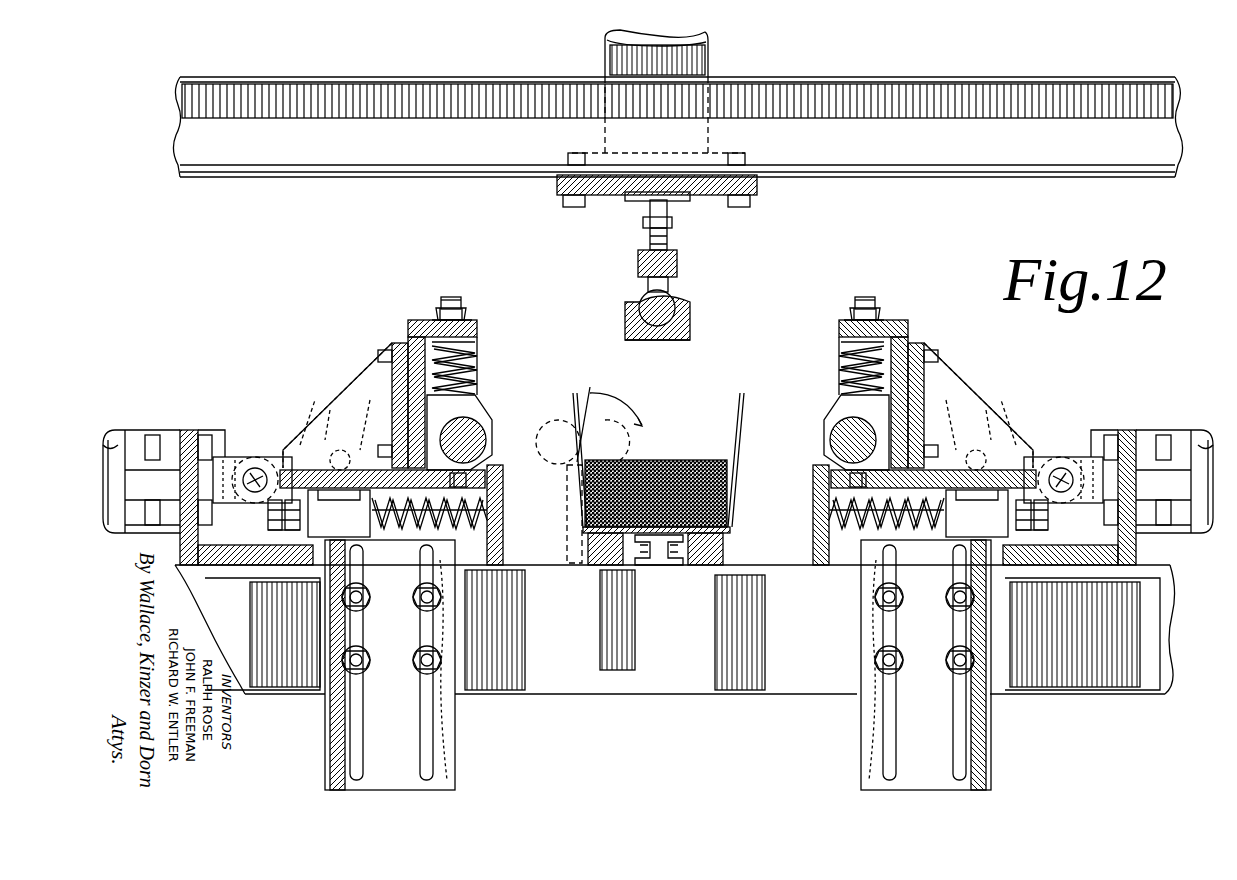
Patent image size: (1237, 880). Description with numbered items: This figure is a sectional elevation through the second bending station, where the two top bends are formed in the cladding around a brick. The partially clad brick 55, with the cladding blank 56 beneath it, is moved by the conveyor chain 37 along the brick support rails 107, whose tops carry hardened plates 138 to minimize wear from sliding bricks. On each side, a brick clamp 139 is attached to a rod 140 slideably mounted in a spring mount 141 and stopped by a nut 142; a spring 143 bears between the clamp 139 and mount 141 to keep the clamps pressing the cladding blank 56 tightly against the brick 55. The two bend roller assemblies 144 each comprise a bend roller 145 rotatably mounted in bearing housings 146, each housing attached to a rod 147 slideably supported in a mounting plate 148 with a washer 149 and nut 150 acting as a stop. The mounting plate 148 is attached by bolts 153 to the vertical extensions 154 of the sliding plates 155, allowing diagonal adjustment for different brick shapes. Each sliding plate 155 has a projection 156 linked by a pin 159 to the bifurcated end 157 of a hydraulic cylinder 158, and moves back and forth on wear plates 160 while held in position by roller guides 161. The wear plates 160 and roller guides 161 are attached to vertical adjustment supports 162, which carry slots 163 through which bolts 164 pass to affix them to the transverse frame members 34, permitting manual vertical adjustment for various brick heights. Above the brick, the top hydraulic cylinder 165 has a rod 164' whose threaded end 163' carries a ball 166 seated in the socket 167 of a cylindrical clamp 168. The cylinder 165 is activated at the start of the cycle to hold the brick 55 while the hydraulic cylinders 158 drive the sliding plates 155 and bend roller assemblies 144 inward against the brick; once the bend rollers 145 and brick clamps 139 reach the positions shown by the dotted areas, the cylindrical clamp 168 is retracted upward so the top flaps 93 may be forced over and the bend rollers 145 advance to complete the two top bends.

The transverse frame members 34 is at (930, 76).
The conveyor chain 37 is at (688, 565).
The brick 55 is at (716, 460).
The cladding blank 56 is at (736, 474).
The top flap 93 is at (575, 408).
The brick support rails 107 is at (723, 552).
The hardened plates 138 is at (730, 530).
The brick clamps 139 is at (503, 544).
The rods 140 is at (1065, 528).
The spring mounts 141 is at (360, 540).
The nuts 142 is at (285, 530).
The springs 143 is at (472, 530).
The bend roller assemblies 144 is at (476, 360).
The bend roller 145 is at (474, 428).
The bearing housings 146 is at (480, 400).
The rod 147 is at (451, 297).
The mounting plate 148 is at (420, 322).
The washer 149 is at (468, 320).
The nut 150 is at (440, 308).
The bolts 153 is at (378, 356).
The vertical extensions 154 is at (396, 345).
The sliding plates 155 is at (285, 462).
The projections 156 is at (268, 462).
The bifurcated end 157 is at (236, 457).
The hydraulic cylinders 158 is at (138, 432).
The pin 159 is at (256, 490).
The wear plates 160 is at (496, 494).
The roller guides 161 is at (850, 470).
The vertical adjustment supports 162 is at (364, 625).
The slots 163 is at (694, 662).
The bolts 164 is at (658, 638).
The top hydraulic cylinder 165 is at (605, 58).
The rod 164' is at (657, 201).
The threaded end 163' is at (680, 260).
The ball 166 is at (670, 300).
The socket 167 is at (691, 317).
The cylindrical clamp 168 is at (675, 340).